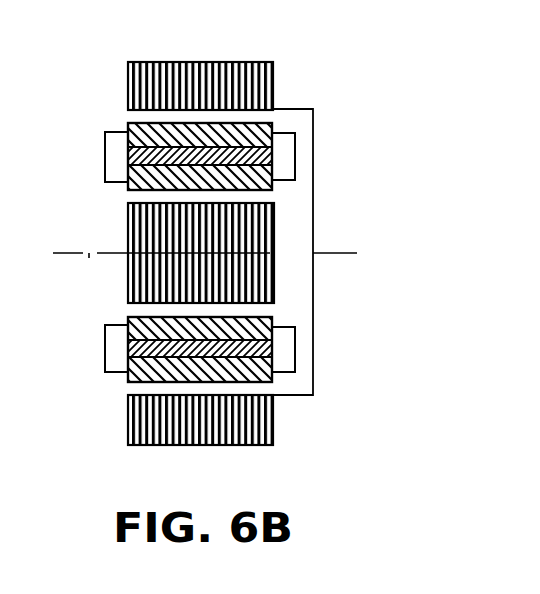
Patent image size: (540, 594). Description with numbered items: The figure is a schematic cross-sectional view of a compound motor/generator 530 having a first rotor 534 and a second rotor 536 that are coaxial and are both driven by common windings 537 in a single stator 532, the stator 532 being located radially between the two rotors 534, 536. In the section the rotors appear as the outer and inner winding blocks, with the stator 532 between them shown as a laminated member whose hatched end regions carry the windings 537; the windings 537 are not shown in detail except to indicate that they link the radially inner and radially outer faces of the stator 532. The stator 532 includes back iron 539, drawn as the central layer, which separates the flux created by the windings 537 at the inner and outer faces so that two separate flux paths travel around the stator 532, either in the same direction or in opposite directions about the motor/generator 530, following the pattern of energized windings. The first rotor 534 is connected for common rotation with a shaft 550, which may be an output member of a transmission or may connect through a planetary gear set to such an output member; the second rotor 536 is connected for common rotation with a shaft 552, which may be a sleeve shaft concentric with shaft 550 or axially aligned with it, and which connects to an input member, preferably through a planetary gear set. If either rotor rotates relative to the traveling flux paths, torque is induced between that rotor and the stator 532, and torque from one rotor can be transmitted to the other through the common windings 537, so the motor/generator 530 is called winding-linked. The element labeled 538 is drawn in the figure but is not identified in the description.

The compound motor/generator 530 is at (327, 402).
The stator 532 is at (268, 137).
The first rotor 534 is at (247, 62).
The second rotor 536 is at (128, 236).
The windings 537 is at (106, 156).
The lower coil winding 538 is at (200, 420).
The back iron 539 is at (130, 348).
The shaft 550 is at (338, 252).
The shaft 552 is at (88, 266).